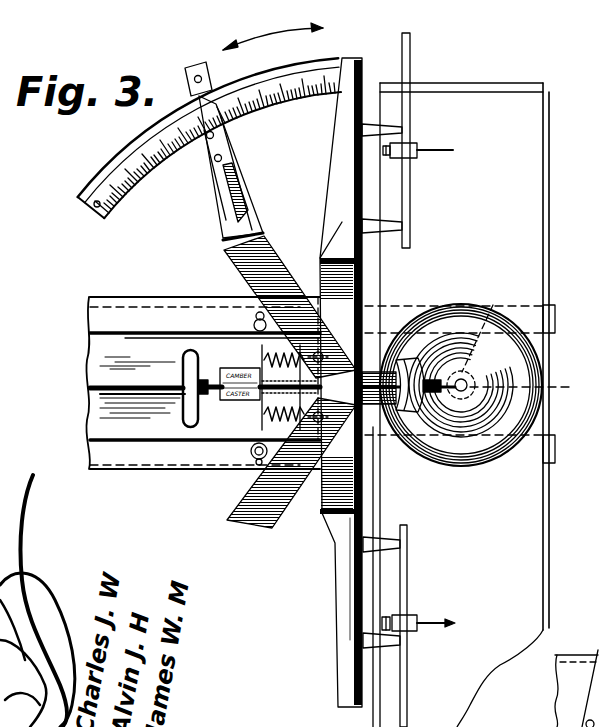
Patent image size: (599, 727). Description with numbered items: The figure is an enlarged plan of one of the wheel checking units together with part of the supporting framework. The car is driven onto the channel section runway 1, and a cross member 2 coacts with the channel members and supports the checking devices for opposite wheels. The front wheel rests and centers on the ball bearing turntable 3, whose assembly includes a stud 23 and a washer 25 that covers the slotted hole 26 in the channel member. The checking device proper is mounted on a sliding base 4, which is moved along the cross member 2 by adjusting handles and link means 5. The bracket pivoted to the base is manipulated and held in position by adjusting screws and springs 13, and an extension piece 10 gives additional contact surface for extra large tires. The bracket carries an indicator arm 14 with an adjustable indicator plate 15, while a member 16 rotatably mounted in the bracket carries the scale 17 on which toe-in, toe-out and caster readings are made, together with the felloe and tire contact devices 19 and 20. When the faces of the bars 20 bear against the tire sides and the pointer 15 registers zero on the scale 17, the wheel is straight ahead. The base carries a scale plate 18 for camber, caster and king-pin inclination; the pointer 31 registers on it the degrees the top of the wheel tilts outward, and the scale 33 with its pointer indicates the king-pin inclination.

The channel section runway 1 is at (461, 405).
The cross member 2 is at (552, 443).
The ball bearing turntable 3 is at (513, 358).
The sliding base 4 is at (172, 453).
The adjusting handle and link means 5 is at (598, 608).
The extension piece 10 is at (431, 334).
The spring 13 is at (254, 329).
The indicator arm 14 is at (235, 173).
The indicator plate 15 is at (220, 135).
The rotatable member 16 is at (364, 300).
The scale 17 is at (296, 88).
The scale plate 18 is at (257, 362).
The felloe and tire contact device 19 is at (451, 151).
The tire contact bar 20 is at (406, 192).
The stud 23 is at (463, 393).
The washer 25 is at (508, 325).
The slotted hole 26 is at (534, 393).
The pointer 31 is at (258, 414).
The scale 33 is at (312, 369).